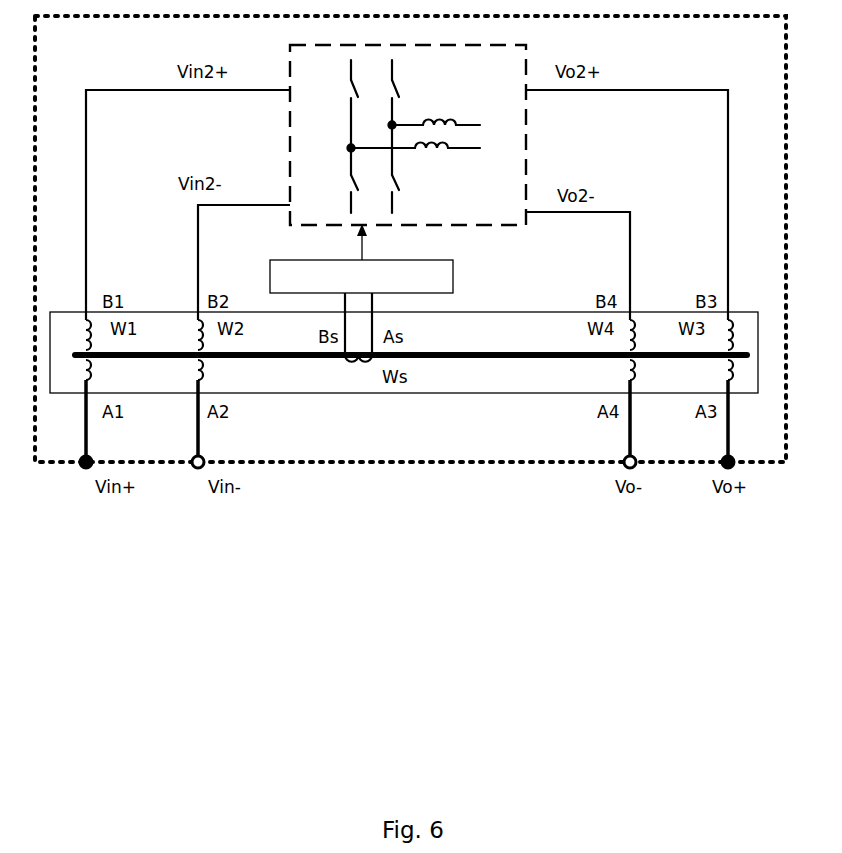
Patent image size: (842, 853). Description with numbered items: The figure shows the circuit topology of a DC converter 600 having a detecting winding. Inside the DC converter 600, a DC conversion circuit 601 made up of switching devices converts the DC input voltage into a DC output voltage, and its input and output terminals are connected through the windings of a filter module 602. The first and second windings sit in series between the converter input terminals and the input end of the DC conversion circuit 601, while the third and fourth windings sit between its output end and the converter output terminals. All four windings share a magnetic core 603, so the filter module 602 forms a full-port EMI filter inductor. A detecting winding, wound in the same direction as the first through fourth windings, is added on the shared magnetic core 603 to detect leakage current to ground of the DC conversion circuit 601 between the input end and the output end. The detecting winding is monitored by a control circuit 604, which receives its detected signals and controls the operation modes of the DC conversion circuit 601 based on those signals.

The DC converter 600 is at (410, 261).
The DC conversion circuit 601 is at (448, 135).
The filter module 602 is at (404, 376).
The shared magnetic core 603 is at (411, 398).
The control circuit 604 is at (361, 258).